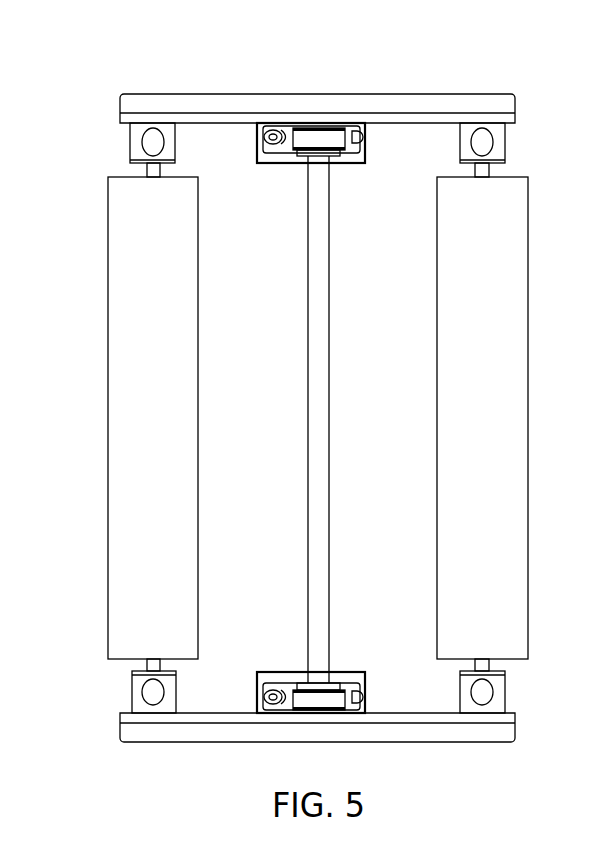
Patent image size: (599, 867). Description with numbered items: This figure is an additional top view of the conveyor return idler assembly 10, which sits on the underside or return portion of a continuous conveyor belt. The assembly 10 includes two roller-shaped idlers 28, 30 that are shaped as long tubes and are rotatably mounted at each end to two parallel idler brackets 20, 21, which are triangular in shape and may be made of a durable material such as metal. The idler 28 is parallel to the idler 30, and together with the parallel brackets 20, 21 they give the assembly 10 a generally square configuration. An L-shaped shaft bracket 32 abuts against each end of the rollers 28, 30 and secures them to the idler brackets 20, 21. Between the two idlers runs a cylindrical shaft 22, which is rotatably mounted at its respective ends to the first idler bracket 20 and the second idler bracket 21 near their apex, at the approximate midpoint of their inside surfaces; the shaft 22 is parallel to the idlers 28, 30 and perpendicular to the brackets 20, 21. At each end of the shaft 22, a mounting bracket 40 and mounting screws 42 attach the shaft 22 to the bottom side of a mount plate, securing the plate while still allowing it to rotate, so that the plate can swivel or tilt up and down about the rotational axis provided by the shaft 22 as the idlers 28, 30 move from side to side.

The conveyor return idler assembly 10 is at (231, 72).
The first idler bracket 20 is at (388, 96).
The second idler bracket 21 is at (218, 733).
The shaft 22 is at (320, 422).
The idler 28 is at (125, 292).
The idler 30 is at (509, 292).
The shaft bracket 32 is at (130, 152).
The mounting bracket 40 is at (340, 697).
The mounting screws 42 is at (273, 690).